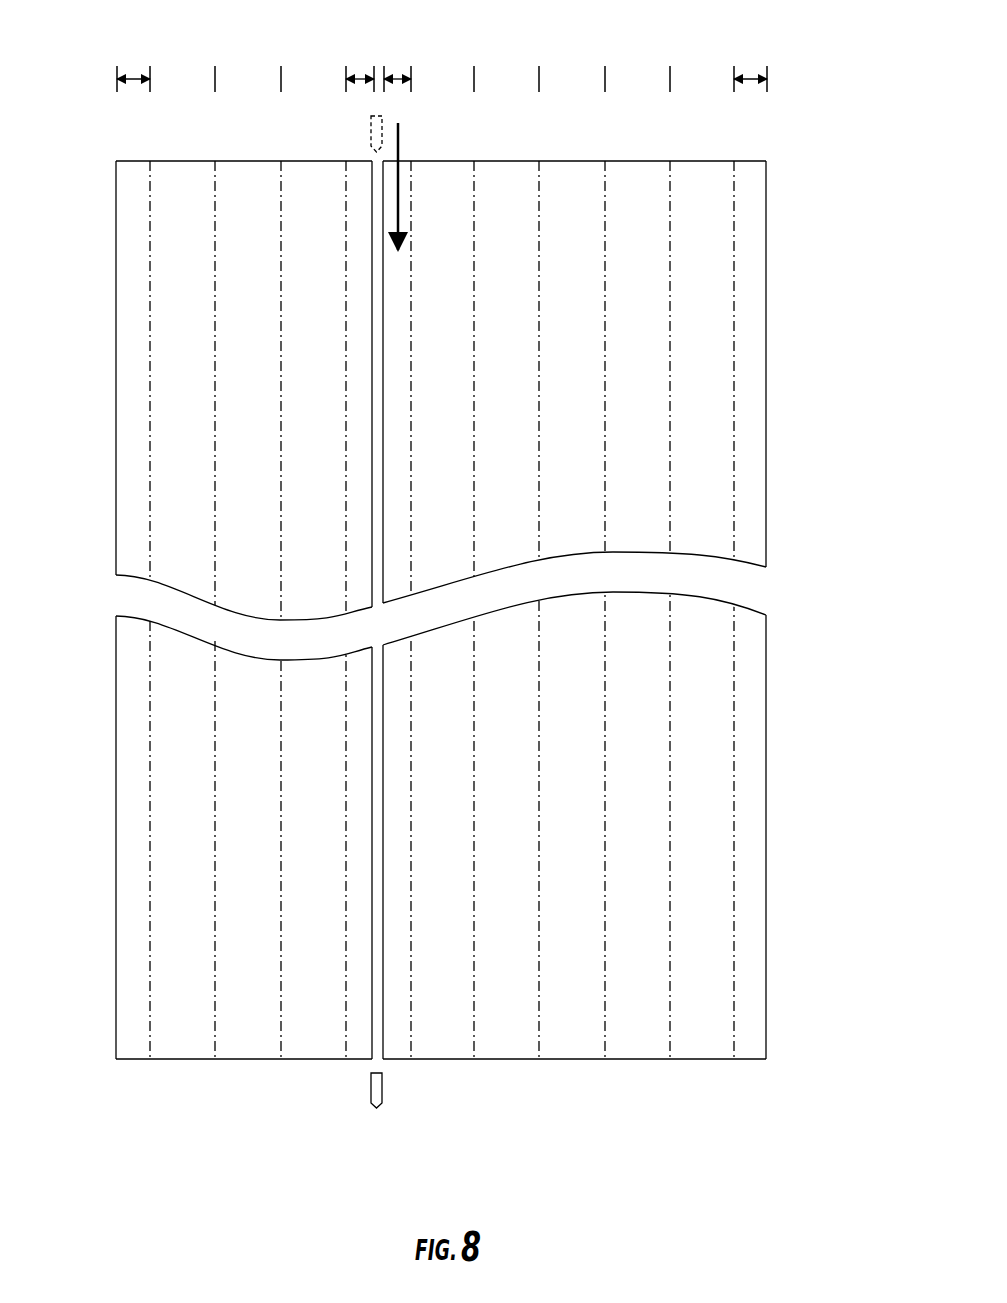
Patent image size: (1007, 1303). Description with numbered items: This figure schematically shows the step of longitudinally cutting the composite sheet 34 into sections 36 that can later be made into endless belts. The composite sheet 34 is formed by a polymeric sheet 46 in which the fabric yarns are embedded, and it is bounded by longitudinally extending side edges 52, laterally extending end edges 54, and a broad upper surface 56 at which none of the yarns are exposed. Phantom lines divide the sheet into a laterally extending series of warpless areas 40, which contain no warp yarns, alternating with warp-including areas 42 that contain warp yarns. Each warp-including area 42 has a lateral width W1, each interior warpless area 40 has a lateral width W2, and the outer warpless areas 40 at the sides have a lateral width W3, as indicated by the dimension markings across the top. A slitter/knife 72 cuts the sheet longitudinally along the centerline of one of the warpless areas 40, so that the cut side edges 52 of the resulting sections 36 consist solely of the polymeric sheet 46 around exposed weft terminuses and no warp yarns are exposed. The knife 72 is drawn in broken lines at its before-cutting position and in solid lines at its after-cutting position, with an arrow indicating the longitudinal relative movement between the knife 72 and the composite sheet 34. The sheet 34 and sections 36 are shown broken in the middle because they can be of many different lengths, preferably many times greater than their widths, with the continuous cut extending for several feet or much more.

The composite sheet 34 is at (435, 670).
The sections 36 is at (435, 670).
The warpless areas 40 is at (128, 1064).
The warp-including areas 42 is at (187, 1064).
The polymeric sheet 46 is at (114, 476).
The side edges 52 is at (114, 790).
The end edges 54 is at (673, 1060).
The upper surface 56 is at (428, 477).
The slitter/knife 72 is at (370, 125).
The width of warp-including area W1 is at (215, 79).
The width of interior warpless area W2 is at (215, 79).
The width of outer warpless area W3 is at (134, 76).